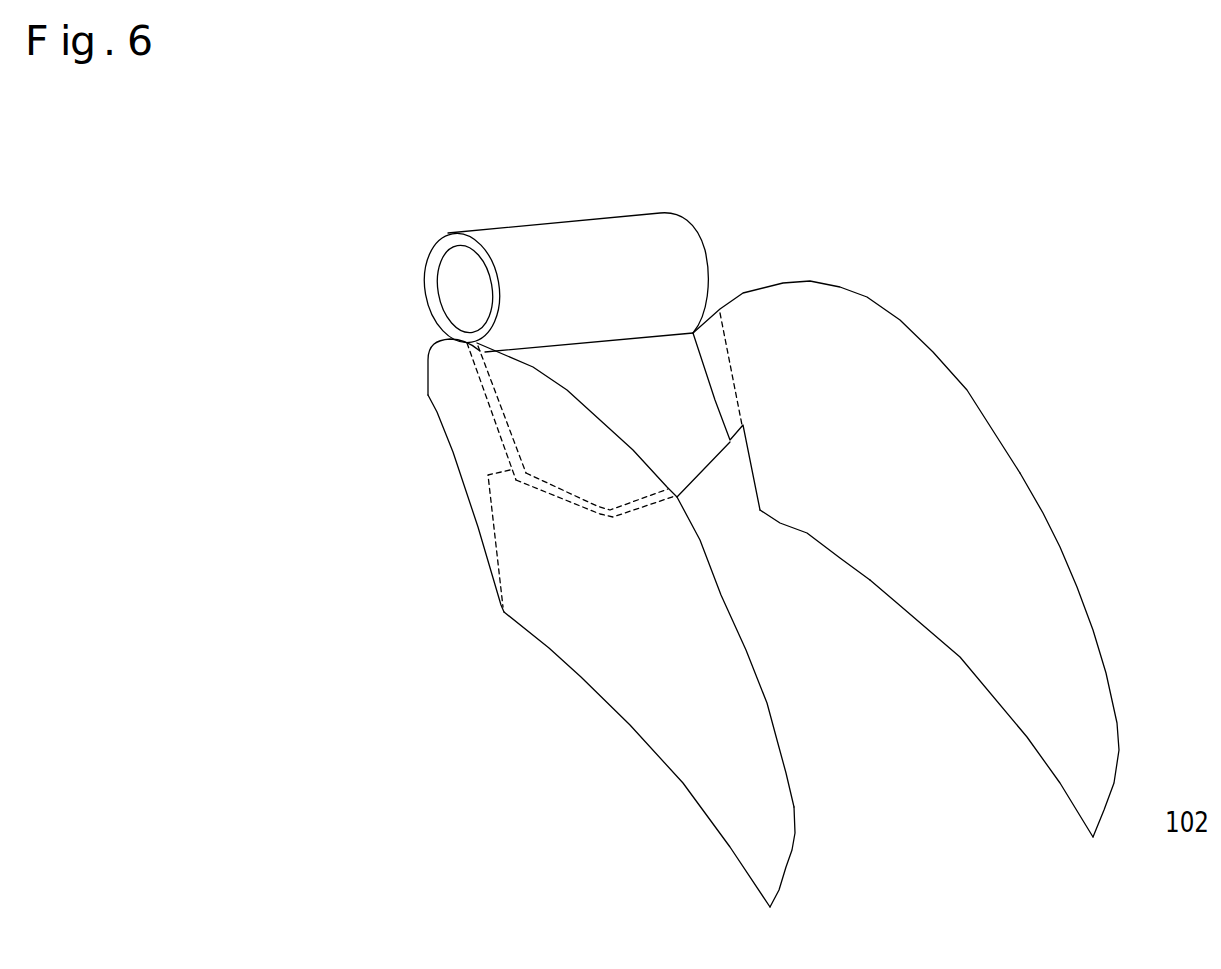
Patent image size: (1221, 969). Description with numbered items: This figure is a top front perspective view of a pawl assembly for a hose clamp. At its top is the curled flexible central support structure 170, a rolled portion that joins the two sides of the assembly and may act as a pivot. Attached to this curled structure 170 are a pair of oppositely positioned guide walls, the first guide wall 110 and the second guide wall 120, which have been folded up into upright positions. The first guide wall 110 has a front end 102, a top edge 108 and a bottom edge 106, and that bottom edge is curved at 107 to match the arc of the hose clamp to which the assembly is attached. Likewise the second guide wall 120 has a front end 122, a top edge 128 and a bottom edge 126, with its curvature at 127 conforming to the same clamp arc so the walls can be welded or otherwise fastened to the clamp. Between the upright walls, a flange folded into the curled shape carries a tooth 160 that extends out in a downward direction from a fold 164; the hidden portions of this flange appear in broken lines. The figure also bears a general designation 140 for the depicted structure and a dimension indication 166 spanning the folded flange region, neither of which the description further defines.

The front end 102 is at (906, 559).
The bottom edge 106 is at (841, 559).
The curved portion 107 is at (900, 600).
The top edge 108 is at (975, 388).
The first guide wall 110 is at (968, 477).
The second guide wall 120 is at (648, 644).
The front end 122 is at (793, 868).
The bottom edge 126 is at (588, 684).
The curved portion 127 is at (550, 649).
The top edge 128 is at (770, 703).
The hinge assembly 140 is at (592, 220).
The tooth 160 is at (560, 475).
The fold 164 is at (568, 345).
The width 166 is at (510, 395).
The curled flexible central support structure 170 is at (625, 245).